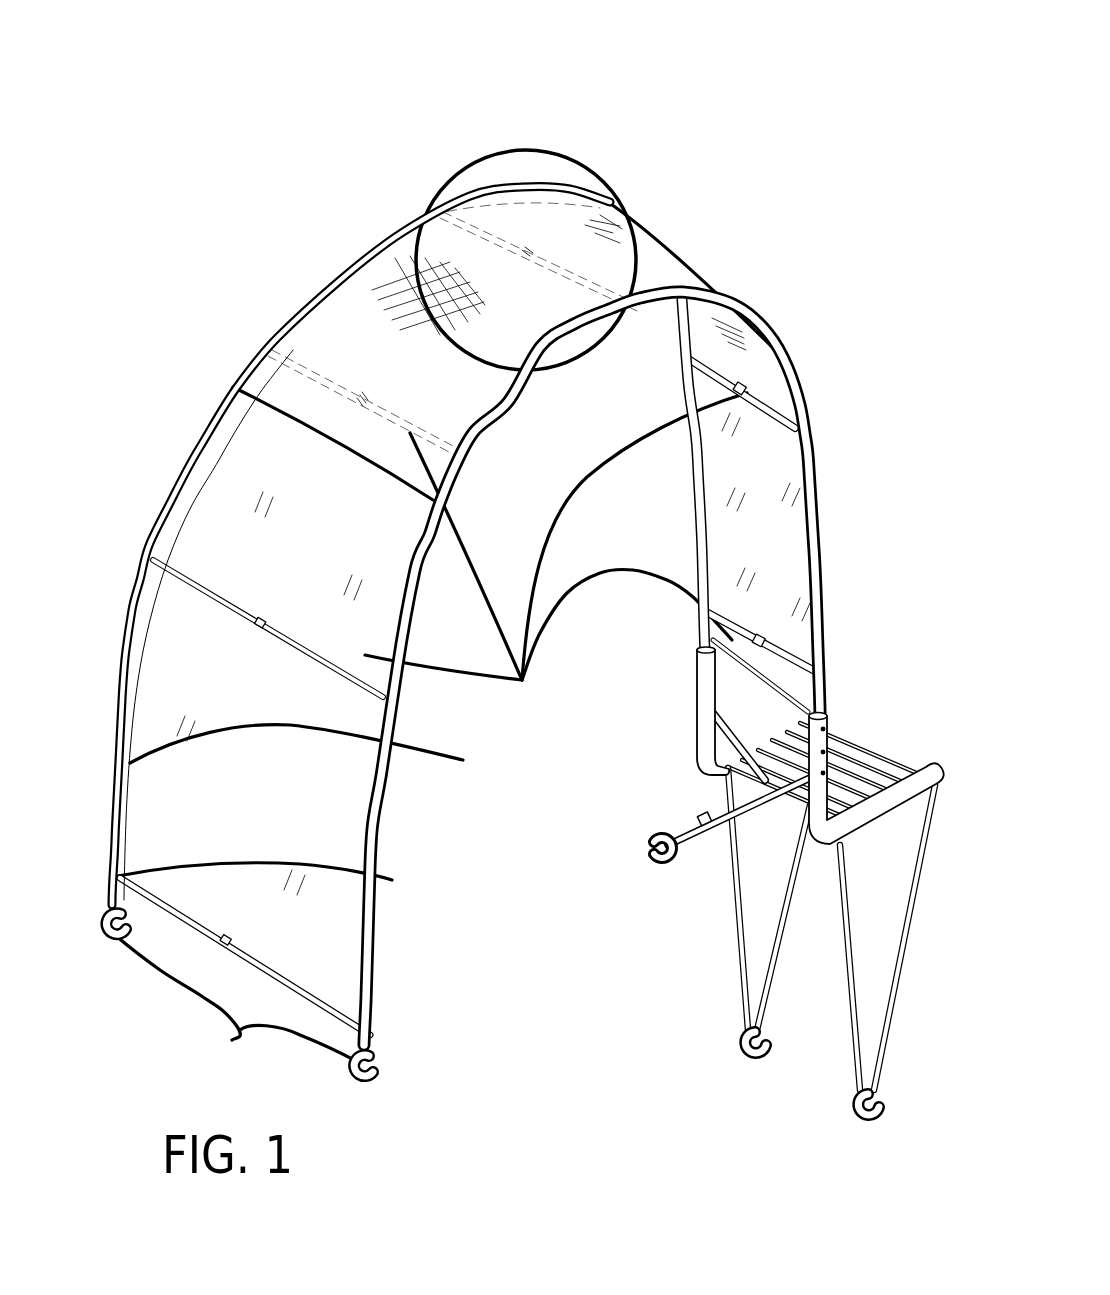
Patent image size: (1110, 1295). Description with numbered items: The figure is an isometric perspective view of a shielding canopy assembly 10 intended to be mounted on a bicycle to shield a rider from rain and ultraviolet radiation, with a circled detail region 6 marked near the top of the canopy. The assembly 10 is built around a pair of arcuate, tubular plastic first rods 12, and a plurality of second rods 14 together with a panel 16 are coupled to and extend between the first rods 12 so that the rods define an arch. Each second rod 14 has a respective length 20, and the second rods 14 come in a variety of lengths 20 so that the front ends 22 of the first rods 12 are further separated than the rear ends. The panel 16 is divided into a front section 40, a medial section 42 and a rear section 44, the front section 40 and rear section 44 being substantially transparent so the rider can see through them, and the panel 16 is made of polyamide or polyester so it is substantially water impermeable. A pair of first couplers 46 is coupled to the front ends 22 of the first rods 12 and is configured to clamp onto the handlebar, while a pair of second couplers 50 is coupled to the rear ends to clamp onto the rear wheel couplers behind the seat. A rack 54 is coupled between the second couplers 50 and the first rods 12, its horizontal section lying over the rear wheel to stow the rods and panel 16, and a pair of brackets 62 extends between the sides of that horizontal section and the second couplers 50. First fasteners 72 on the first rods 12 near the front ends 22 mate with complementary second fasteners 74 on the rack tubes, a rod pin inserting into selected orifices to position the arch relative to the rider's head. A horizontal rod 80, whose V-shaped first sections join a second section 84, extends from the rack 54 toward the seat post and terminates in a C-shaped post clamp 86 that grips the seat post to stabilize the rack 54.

The shielding canopy assembly 10 is at (748, 128).
The detail circle 6 is at (441, 188).
The first rod 12 is at (380, 832).
The second rod 14 is at (556, 548).
The panel 16 is at (215, 510).
The length 20 is at (358, 1015).
The front end 22 is at (110, 902).
The front section 40 is at (227, 670).
The medial section 42 is at (393, 280).
The rear section 44 is at (760, 480).
The first coupler 46 is at (235, 1033).
The second coupler 50 is at (770, 1033).
The rack 54 is at (883, 803).
The bracket 62 is at (843, 920).
The first fastener 72 is at (825, 773).
The second fastener 74 is at (825, 752).
The horizontal rod 80 is at (712, 870).
The second section 84 is at (712, 870).
The post clamp 86 is at (648, 847).